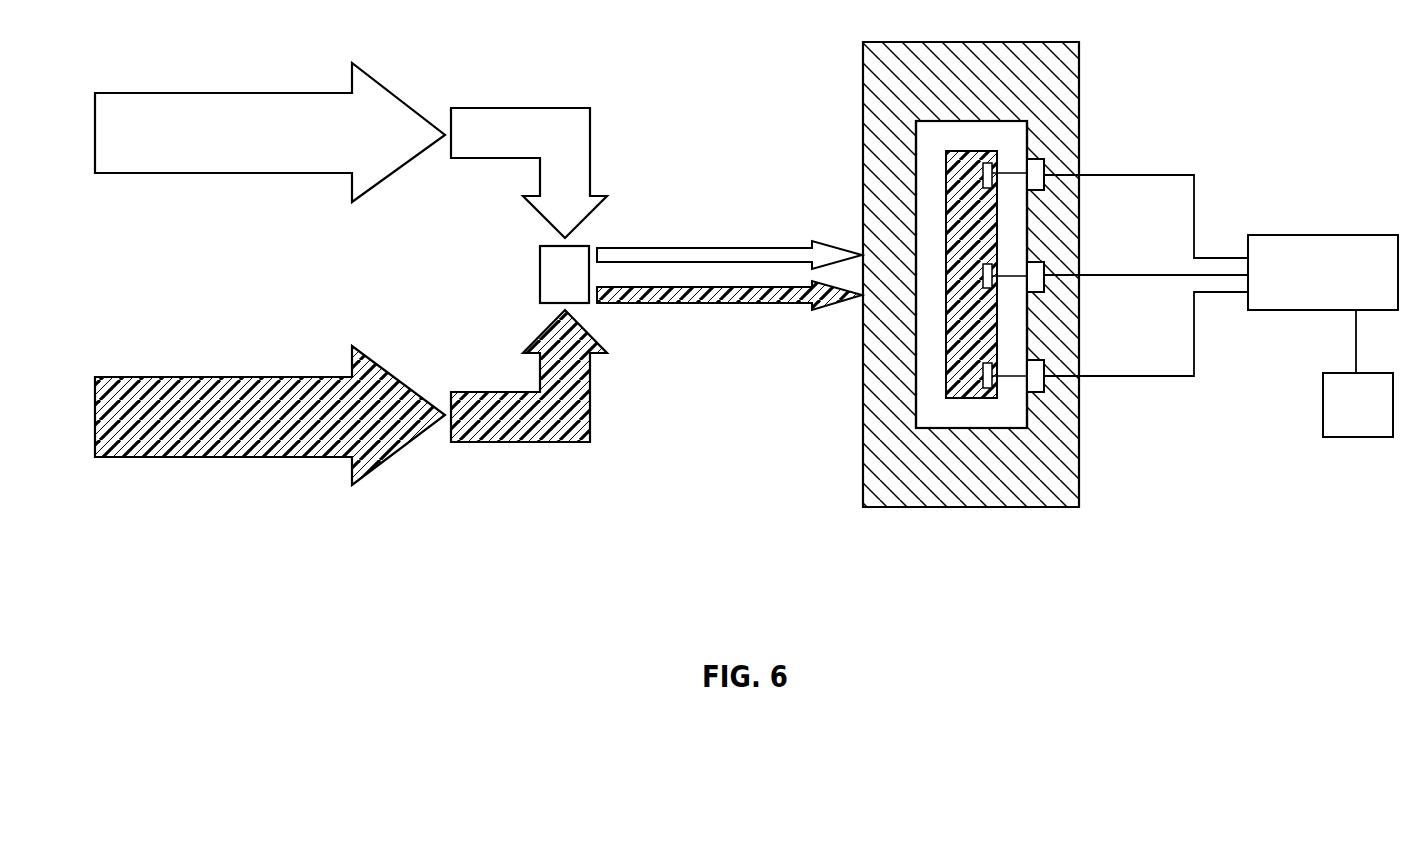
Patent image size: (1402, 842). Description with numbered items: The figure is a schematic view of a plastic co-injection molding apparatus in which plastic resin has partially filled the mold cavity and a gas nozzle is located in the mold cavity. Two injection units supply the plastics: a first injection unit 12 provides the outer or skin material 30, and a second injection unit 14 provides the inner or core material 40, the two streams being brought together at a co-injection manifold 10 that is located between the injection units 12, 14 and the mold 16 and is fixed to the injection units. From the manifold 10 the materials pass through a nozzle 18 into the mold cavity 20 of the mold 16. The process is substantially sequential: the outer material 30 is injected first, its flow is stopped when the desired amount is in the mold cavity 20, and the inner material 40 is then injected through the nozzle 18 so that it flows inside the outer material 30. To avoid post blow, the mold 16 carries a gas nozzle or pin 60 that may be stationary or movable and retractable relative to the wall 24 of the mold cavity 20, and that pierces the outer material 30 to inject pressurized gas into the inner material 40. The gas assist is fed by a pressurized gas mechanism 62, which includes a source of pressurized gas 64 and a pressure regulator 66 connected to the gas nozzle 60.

The co-injection manifold 10 is at (540, 275).
The first injection unit 12 is at (148, 192).
The second injection unit 14 is at (148, 468).
The mold 16 is at (1057, 433).
The nozzle 18 is at (728, 245).
The mold cavity 20 is at (910, 363).
The wall of the mold cavity 24 is at (1022, 410).
The outer material 30 is at (270, 104).
The inner material 40 is at (268, 440).
The gas nozzle 60 is at (1044, 165).
The pressurized gas mechanism 62 is at (1355, 216).
The source of pressurized gas 64 is at (1280, 240).
The pressure regulator 66 is at (1363, 433).